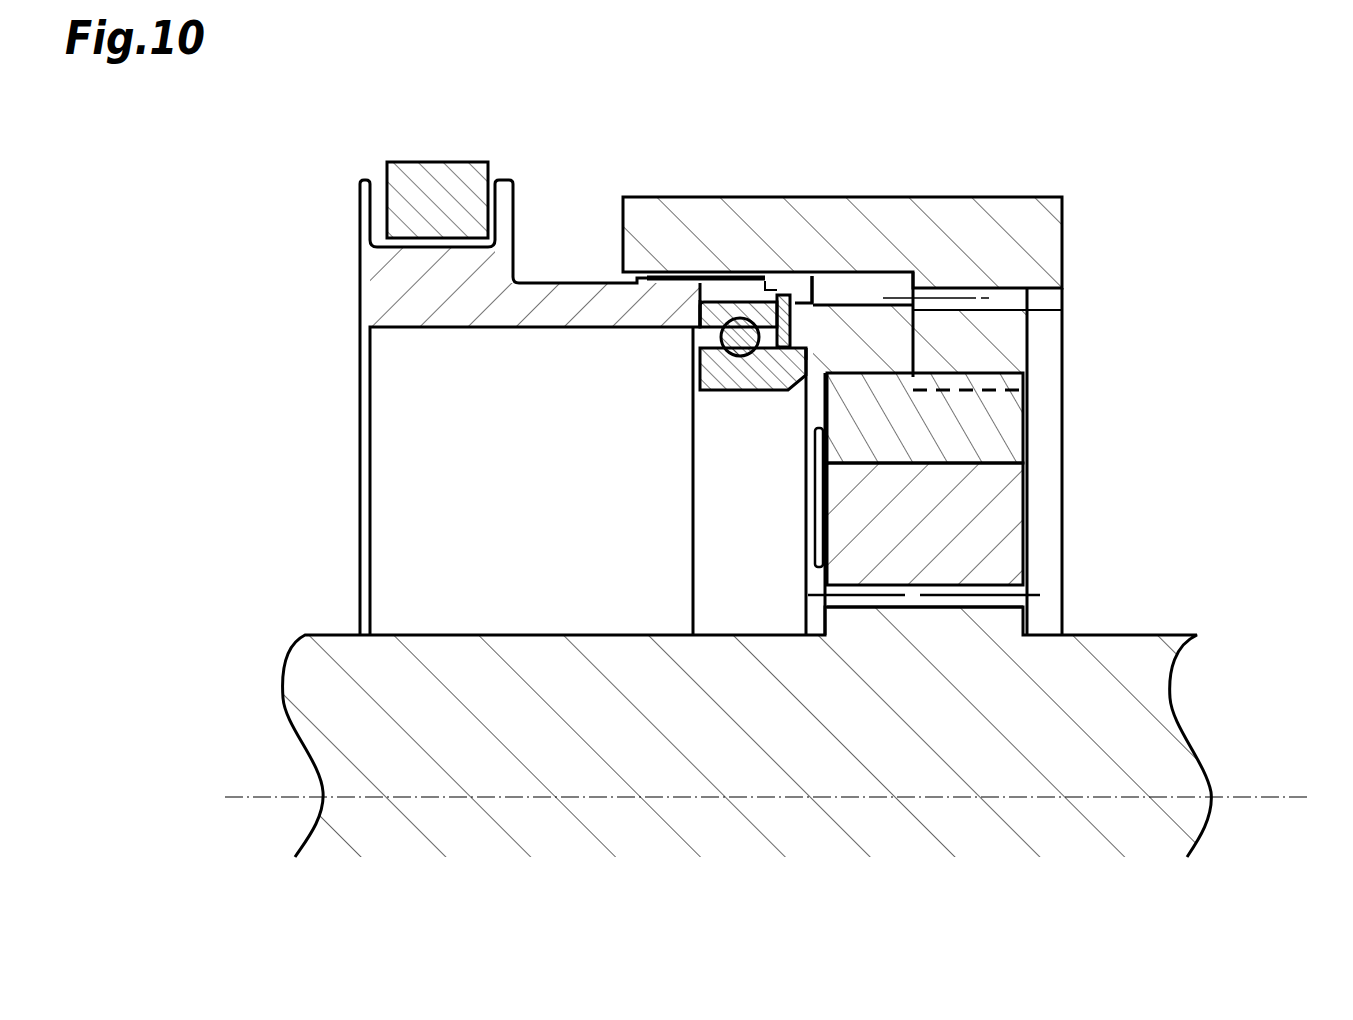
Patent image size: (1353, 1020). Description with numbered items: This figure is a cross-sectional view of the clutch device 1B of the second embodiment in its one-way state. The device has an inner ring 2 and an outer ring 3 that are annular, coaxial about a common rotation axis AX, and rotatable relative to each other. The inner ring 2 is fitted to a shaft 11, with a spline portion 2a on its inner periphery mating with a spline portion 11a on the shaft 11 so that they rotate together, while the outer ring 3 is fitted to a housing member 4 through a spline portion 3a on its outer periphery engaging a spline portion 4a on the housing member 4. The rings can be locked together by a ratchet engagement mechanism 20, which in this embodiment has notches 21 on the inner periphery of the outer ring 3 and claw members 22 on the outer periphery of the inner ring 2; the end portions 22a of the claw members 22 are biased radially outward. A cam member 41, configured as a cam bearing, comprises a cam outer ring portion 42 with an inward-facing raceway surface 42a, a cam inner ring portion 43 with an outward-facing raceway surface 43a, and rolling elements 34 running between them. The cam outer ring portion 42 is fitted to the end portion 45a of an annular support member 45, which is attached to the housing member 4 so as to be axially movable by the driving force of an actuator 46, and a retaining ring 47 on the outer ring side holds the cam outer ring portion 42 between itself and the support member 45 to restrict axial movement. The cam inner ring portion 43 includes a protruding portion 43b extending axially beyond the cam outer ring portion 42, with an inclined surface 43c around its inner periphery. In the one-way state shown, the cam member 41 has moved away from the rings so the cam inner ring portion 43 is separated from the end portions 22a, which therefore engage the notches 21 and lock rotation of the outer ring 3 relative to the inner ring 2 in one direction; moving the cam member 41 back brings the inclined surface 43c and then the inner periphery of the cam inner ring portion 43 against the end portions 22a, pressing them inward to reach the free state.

The clutch device 1B is at (1242, 237).
The inner ring 2 is at (998, 535).
The spline portion 2a is at (998, 577).
The outer ring 3 is at (813, 353).
The spline portion 3a is at (987, 220).
The housing member 4 is at (842, 386).
The spline portion 4a is at (997, 287).
The shaft 11 is at (1165, 645).
The spline portion 11a is at (1023, 590).
The ratchet engagement mechanism 20 is at (1033, 420).
The notches 21 is at (1000, 386).
The claw members 22 is at (1033, 420).
The end portions 22a is at (1076, 388).
The rolling elements 34 is at (761, 290).
The cam member 41 is at (808, 348).
The cam outer ring portion 42 is at (745, 249).
The raceway surface 42a is at (740, 300).
The cam inner ring portion 43 is at (970, 285).
The raceway surface 43a is at (813, 350).
The protruding portion 43b is at (993, 298).
The inclined surface 43c is at (816, 356).
The support member 45 is at (538, 386).
The end portion 45a is at (717, 296).
The actuator 46 is at (441, 182).
The retaining ring 47 is at (787, 294).
The rotation axis AX is at (1273, 795).